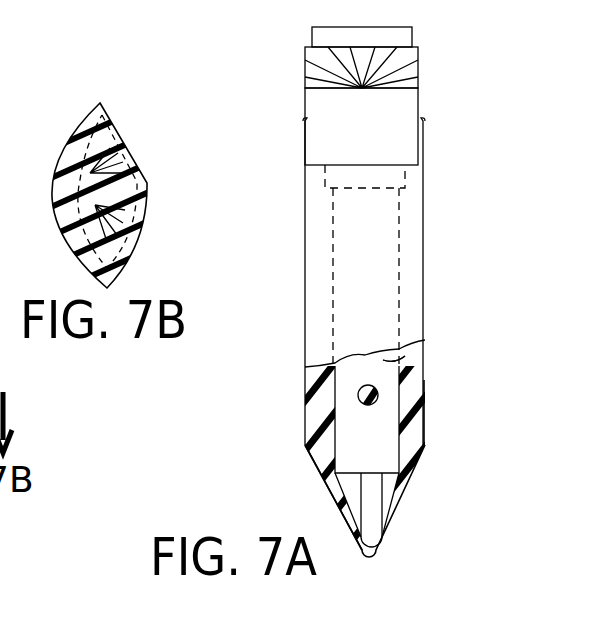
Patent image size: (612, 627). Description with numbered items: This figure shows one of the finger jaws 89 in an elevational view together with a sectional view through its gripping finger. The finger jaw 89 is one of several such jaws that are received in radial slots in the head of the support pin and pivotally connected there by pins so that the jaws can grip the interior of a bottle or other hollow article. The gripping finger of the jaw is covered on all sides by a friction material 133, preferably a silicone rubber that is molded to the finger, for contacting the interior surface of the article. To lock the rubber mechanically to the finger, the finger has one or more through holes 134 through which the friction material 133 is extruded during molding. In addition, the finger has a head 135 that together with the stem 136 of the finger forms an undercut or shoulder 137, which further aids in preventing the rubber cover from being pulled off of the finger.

In FIG. 7A, the finger jaw 89 is at (304, 208).
In FIG. 7B, the friction material 133 is at (55, 152).
In FIG. 7A, the friction material 133 is at (310, 477).
In FIG. 7A, the through holes 134 is at (360, 401).
In FIG. 7A, the head 135 is at (345, 490).
In FIG. 7B, the stem 136 is at (135, 152).
In FIG. 7A, the stem 136 is at (397, 358).
In FIG. 7A, the undercut or shoulder 137 is at (434, 440).